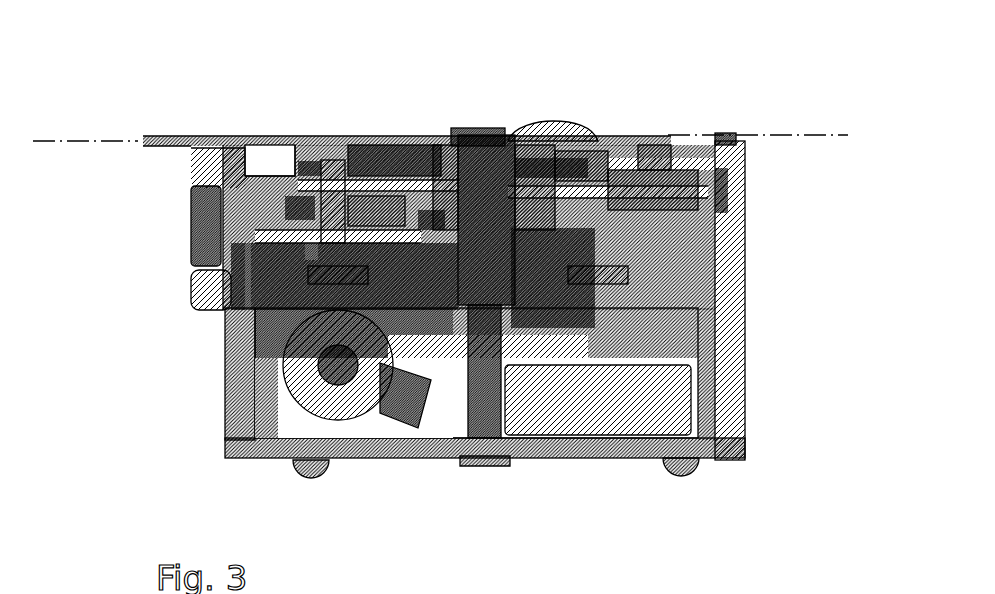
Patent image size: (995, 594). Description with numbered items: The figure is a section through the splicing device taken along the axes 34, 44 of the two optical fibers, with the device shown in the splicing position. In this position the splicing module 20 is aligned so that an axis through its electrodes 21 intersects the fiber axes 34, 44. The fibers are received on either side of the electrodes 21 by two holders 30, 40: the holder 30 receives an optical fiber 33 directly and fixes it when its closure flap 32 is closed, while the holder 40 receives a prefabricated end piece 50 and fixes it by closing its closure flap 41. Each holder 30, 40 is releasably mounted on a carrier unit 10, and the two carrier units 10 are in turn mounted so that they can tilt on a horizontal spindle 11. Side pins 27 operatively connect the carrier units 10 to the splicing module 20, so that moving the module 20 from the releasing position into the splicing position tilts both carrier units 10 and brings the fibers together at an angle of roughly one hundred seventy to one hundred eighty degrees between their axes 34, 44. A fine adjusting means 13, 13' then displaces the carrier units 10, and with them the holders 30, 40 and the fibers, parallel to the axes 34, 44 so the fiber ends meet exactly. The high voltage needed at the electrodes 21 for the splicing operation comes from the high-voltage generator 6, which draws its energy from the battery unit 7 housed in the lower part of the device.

The high-voltage generator 6 is at (360, 397).
The battery unit 7 is at (637, 400).
The carrier unit 10 is at (318, 137).
The horizontal spindle 11 is at (440, 138).
The fine adjusting means 13 is at (179, 313).
The fine adjusting means 13' is at (771, 296).
The splicing module 20 is at (470, 270).
The electrodes 21 is at (478, 138).
The side pins 27 is at (335, 268).
The holder 30 is at (402, 138).
The closure flap 32 is at (365, 128).
The optical fiber 33 is at (187, 133).
The axis of the optical fiber 34 is at (80, 133).
The holder 40 is at (628, 135).
The closure flap 41 is at (567, 120).
The axis of the optical fiber 44 is at (775, 125).
The prefabricated end piece 50 is at (508, 138).